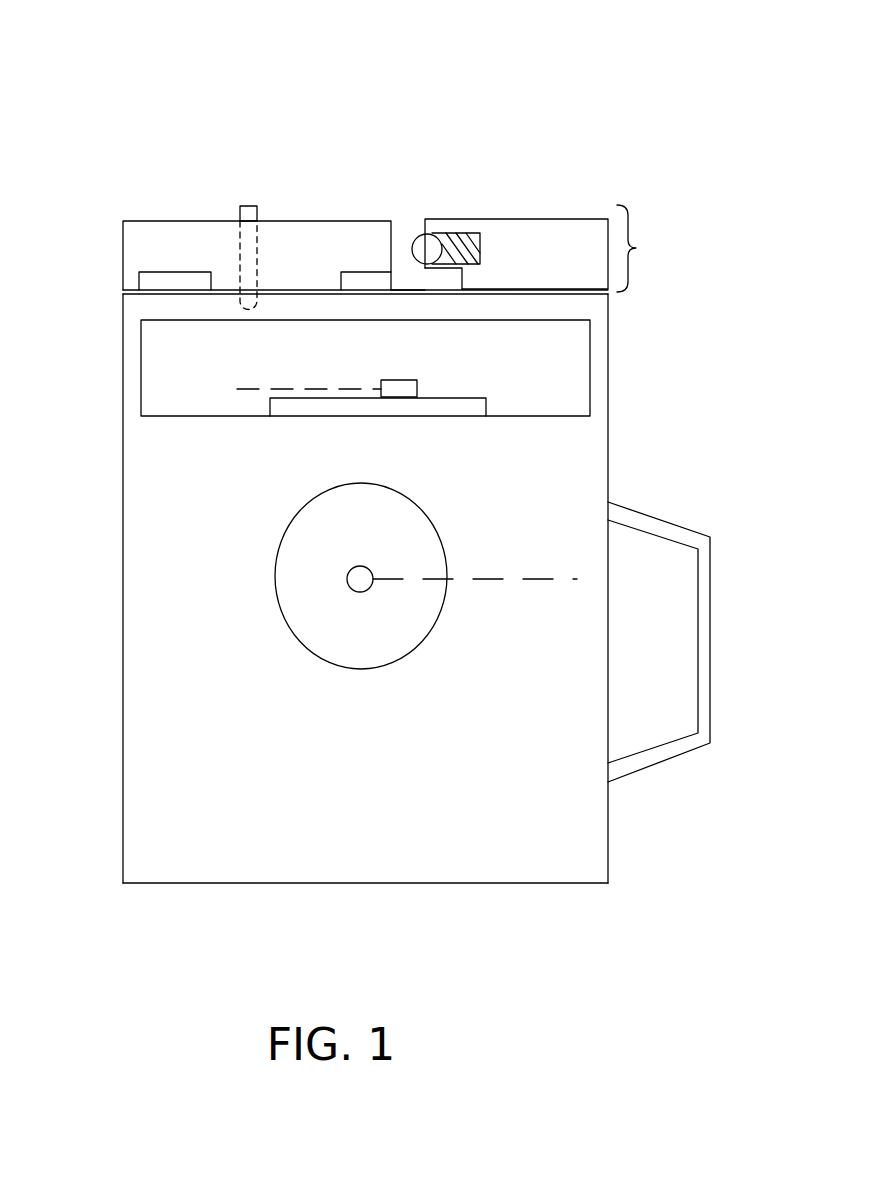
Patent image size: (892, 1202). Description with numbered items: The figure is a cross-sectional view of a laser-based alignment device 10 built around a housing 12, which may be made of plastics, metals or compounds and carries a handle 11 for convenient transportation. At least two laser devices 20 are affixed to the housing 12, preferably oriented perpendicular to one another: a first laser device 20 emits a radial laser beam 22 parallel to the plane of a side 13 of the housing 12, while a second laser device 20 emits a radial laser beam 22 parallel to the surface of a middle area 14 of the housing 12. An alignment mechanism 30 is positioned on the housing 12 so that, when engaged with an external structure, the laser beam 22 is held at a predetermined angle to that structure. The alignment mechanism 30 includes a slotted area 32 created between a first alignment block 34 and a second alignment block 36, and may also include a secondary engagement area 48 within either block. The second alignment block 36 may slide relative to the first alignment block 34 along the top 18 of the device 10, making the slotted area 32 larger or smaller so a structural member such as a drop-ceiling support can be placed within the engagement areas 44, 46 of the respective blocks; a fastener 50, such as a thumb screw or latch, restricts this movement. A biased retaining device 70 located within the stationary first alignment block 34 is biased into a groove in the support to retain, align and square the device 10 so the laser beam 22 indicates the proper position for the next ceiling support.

The laser-based alignment device 10 is at (78, 49).
The handle 11 is at (712, 640).
The housing 12 is at (404, 637).
The side 13 is at (382, 848).
The middle area 14 is at (173, 416).
The top 18 is at (127, 290).
The laser device 20 is at (407, 389).
The laser beam 22 is at (250, 389).
The alignment mechanism 30 is at (551, 233).
The slotted area 32 is at (407, 232).
The first alignment block 34 is at (538, 250).
The second alignment block 36 is at (262, 193).
The engagement area 44 is at (442, 279).
The engagement area 46 is at (365, 282).
The secondary engagement area 48 is at (175, 276).
The fastener 50 is at (248, 205).
The biased retaining device 70 is at (458, 245).